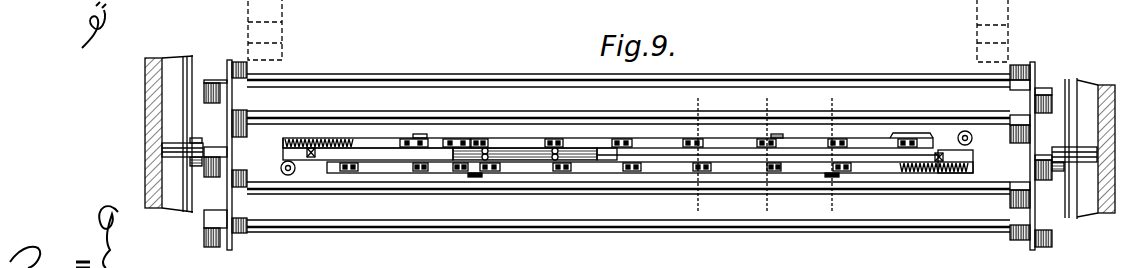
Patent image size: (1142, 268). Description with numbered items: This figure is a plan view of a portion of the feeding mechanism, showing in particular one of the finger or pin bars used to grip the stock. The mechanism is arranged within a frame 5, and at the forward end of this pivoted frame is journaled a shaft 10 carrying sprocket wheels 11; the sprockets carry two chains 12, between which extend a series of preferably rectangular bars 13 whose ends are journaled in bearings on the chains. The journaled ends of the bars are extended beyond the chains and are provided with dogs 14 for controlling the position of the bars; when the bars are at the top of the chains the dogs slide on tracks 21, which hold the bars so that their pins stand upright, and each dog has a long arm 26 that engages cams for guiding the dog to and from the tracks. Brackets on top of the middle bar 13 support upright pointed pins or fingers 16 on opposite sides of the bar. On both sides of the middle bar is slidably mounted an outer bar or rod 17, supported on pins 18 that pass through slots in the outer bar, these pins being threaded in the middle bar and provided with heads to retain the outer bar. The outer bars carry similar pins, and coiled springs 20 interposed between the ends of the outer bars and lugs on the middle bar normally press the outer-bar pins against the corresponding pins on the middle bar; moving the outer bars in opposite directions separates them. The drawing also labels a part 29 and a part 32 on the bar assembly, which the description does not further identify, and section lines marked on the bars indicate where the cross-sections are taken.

The frame 5 is at (154, 60).
The tracks 21 is at (192, 66).
The dogs 14 is at (187, 148).
The chains 12 is at (228, 234).
The pins or fingers 16 is at (628, 107).
The bar or rod 17 is at (460, 140).
The bars 13 is at (510, 150).
The coiled springs 20 is at (312, 137).
The screw 29 is at (288, 175).
The pins 18 is at (480, 177).
The coupling block 32 is at (613, 152).
The long arm 26 is at (968, 176).
The shaft 10 is at (708, 98).
The sprocket wheels 11 is at (777, 98).